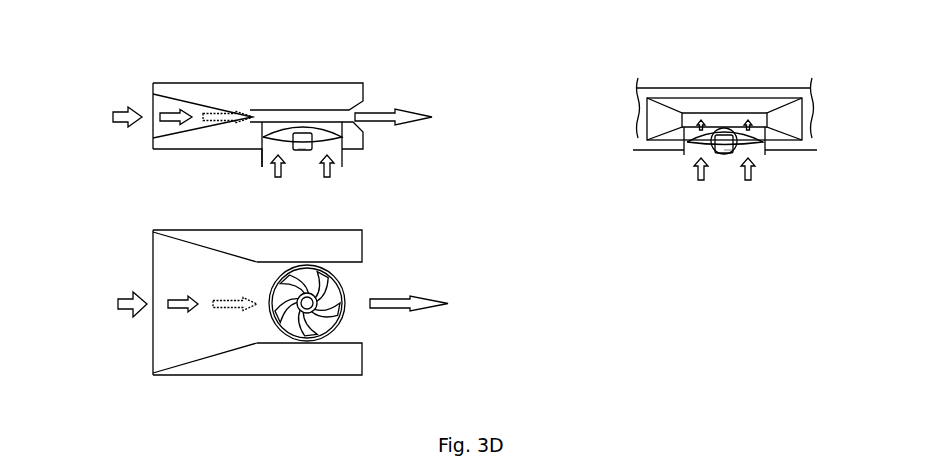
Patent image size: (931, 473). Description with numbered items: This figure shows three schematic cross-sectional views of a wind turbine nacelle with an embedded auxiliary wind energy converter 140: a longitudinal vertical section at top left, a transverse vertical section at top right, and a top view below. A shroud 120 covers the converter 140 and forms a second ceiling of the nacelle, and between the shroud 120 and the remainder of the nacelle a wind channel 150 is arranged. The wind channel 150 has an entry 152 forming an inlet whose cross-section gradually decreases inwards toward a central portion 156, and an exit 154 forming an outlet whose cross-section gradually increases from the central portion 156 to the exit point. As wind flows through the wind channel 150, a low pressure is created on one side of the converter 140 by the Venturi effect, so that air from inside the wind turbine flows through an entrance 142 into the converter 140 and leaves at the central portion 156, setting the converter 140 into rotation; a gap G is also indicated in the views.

The shroud 120 is at (251, 98).
The auxiliary wind energy converter 140 is at (302, 128).
The entrance 142 is at (337, 172).
The wind channel 150 is at (173, 128).
The entry 152 is at (153, 102).
The exit 154 is at (438, 113).
The central portion 156 is at (350, 322).
The gap G is at (298, 149).